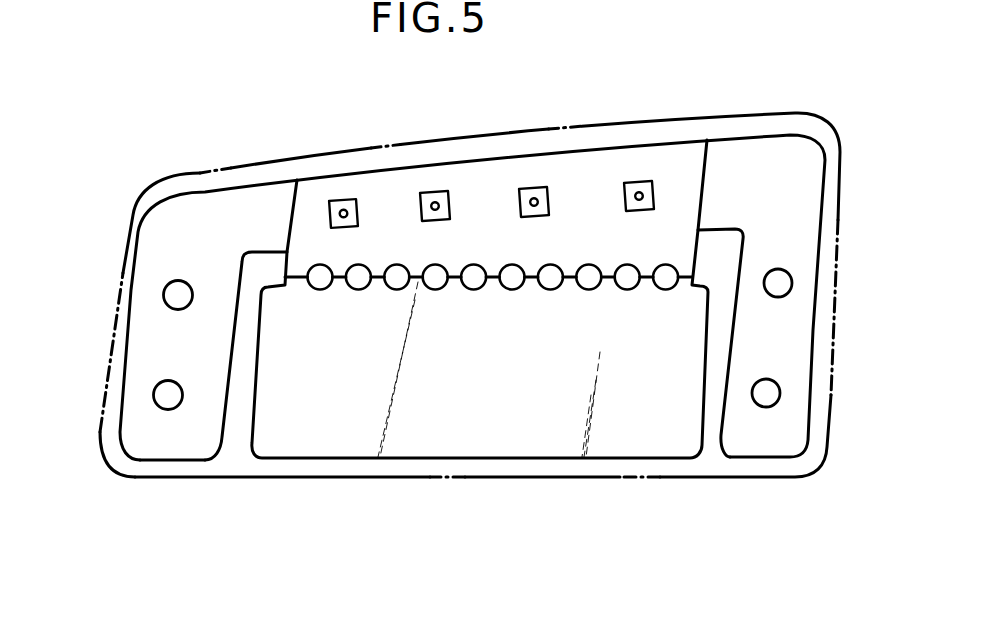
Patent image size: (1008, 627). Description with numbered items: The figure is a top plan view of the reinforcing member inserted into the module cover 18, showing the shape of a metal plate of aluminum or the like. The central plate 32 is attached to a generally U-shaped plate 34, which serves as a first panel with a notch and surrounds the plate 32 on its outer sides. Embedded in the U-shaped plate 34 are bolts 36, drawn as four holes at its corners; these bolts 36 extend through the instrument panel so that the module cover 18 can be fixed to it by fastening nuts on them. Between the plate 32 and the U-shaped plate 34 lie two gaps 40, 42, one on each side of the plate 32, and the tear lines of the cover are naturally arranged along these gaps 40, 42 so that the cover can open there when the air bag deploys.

The module cover 18 is at (93, 318).
The plate 32 is at (493, 443).
The U-shaped plate 34 is at (755, 148).
The bolts 36 is at (176, 293).
The gap 40 is at (233, 437).
The gap 42 is at (705, 438).